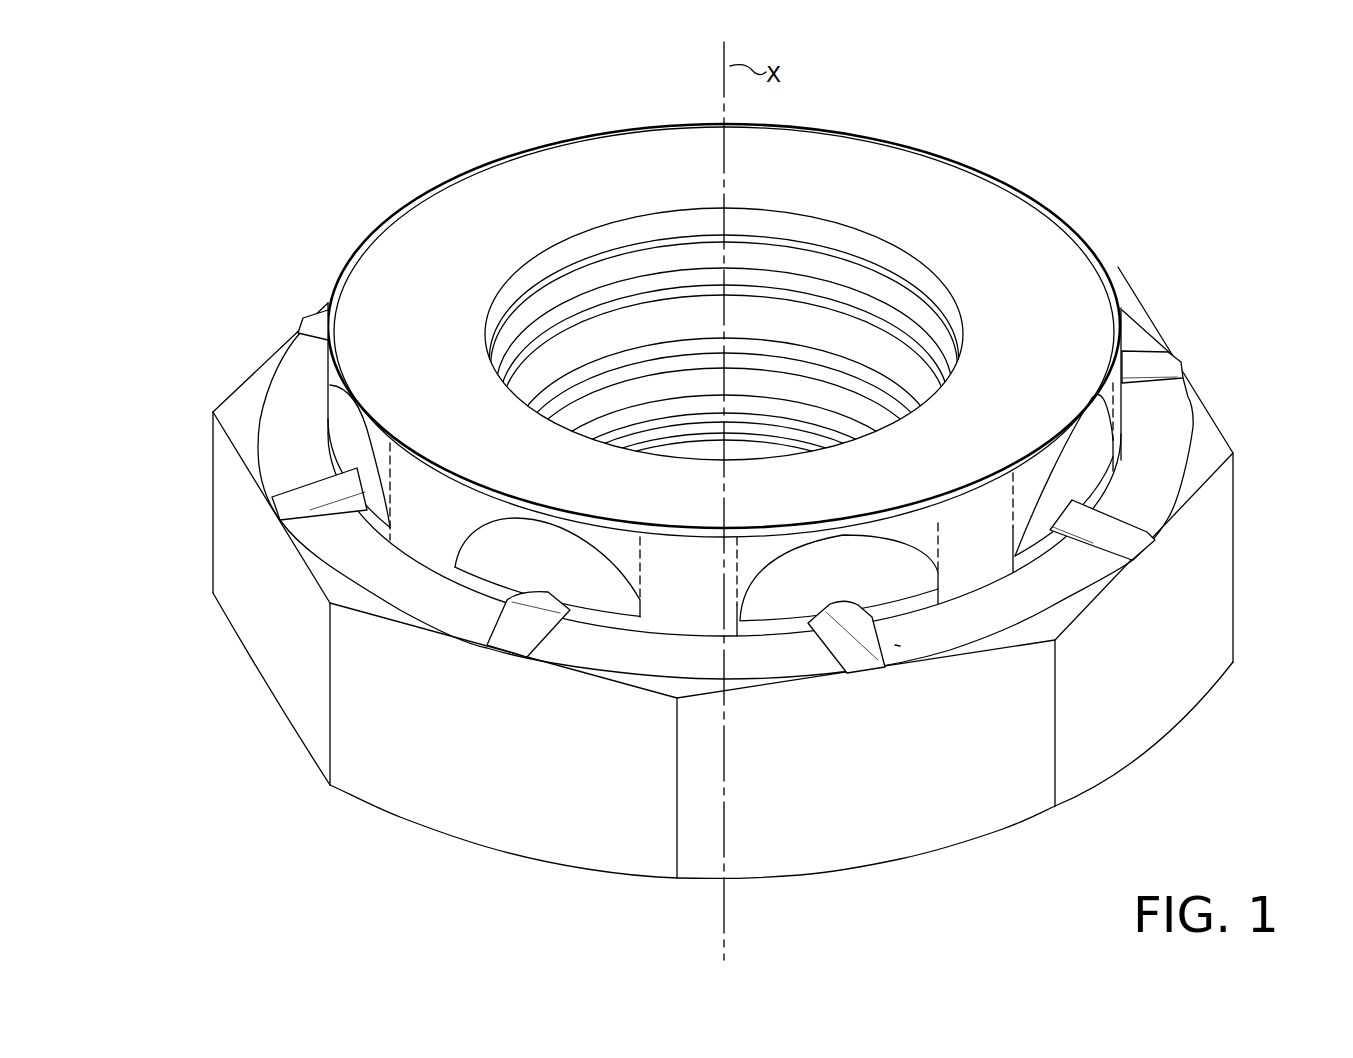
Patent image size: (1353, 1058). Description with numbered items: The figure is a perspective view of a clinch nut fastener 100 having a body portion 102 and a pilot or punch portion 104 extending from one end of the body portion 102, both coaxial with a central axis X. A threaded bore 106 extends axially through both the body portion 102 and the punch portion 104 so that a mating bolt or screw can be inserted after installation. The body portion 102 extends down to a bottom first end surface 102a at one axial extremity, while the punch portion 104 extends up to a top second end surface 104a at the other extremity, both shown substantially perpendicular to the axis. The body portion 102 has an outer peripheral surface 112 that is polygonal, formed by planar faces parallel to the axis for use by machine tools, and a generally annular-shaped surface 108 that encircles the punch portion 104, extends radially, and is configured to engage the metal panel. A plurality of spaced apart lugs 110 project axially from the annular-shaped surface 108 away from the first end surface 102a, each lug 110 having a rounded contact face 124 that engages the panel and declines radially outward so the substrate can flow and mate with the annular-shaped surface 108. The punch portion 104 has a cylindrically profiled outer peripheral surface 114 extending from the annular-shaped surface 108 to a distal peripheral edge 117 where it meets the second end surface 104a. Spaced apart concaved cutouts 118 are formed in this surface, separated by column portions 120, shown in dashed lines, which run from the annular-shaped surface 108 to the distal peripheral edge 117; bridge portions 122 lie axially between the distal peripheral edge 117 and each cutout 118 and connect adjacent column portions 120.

The fastener 100 is at (1240, 126).
The body portion 102 is at (183, 518).
The first end surface 102a is at (932, 860).
The punch portion 104 is at (405, 186).
The second end surface 104a is at (888, 162).
The threaded bore 106 is at (607, 286).
The annular-shaped surface 108 is at (1194, 405).
The lugs 110 is at (560, 645).
The outer peripheral surface of the body portion 112 is at (1228, 576).
The outer peripheral surface of the punch portion 114 is at (326, 385).
The distal peripheral edge 117 is at (1048, 212).
The cutouts 118 is at (1076, 382).
The column portions 120 is at (751, 494).
The bridge portions 122 is at (474, 505).
The contact face 124 is at (1108, 528).